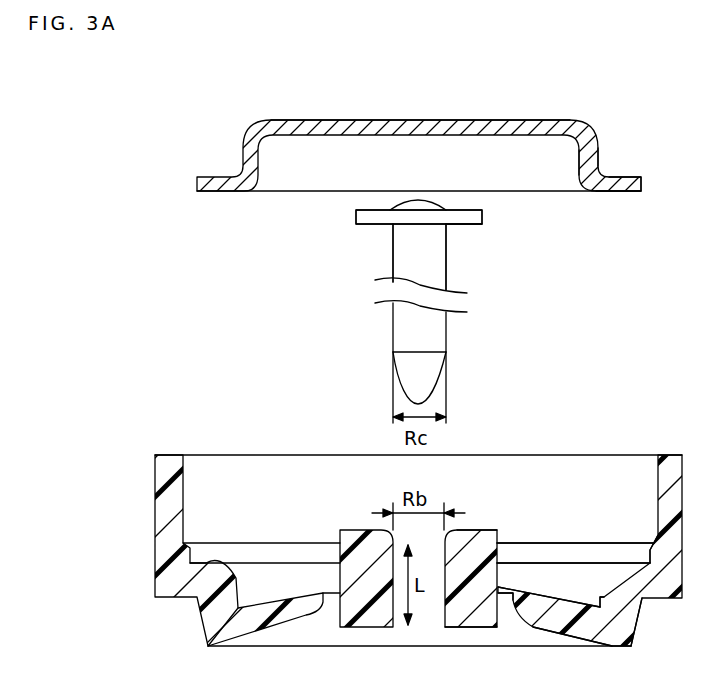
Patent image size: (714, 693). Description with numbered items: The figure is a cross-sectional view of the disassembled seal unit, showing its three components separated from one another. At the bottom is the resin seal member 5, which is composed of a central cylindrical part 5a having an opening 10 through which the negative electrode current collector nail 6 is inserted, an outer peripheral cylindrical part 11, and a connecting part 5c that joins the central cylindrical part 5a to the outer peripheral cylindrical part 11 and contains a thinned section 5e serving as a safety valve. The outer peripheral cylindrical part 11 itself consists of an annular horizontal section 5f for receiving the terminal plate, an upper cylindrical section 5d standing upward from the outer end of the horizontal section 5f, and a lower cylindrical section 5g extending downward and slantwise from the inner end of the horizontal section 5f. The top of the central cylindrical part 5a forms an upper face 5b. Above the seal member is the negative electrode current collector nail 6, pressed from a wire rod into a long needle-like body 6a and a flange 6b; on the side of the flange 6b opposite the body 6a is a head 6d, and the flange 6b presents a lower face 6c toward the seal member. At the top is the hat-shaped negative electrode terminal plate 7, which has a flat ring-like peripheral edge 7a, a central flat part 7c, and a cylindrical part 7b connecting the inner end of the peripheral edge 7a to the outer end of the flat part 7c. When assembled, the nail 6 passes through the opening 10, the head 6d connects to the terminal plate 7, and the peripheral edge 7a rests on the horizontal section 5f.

The resin seal member 5 is at (182, 455).
The central cylindrical part 5a is at (477, 615).
The upper face of the central cylindrical part 5b is at (480, 530).
The connecting part 5c is at (583, 630).
The upper cylindrical section 5d is at (672, 536).
The thinned section 5e is at (512, 605).
The annular horizontal section 5f is at (627, 567).
The lower cylindrical section 5g is at (617, 603).
The negative electrode current collector nail 6 is at (350, 218).
The body 6a is at (396, 267).
The flange 6b is at (482, 218).
The lower face of the flange 6c is at (466, 228).
The head 6d is at (418, 207).
The negative electrode terminal plate 7 is at (242, 152).
The peripheral edge 7a is at (618, 192).
The cylindrical part 7b is at (592, 153).
The central flat part 7c is at (474, 120).
The opening 10 is at (440, 612).
The outer peripheral cylindrical part 11 is at (653, 612).